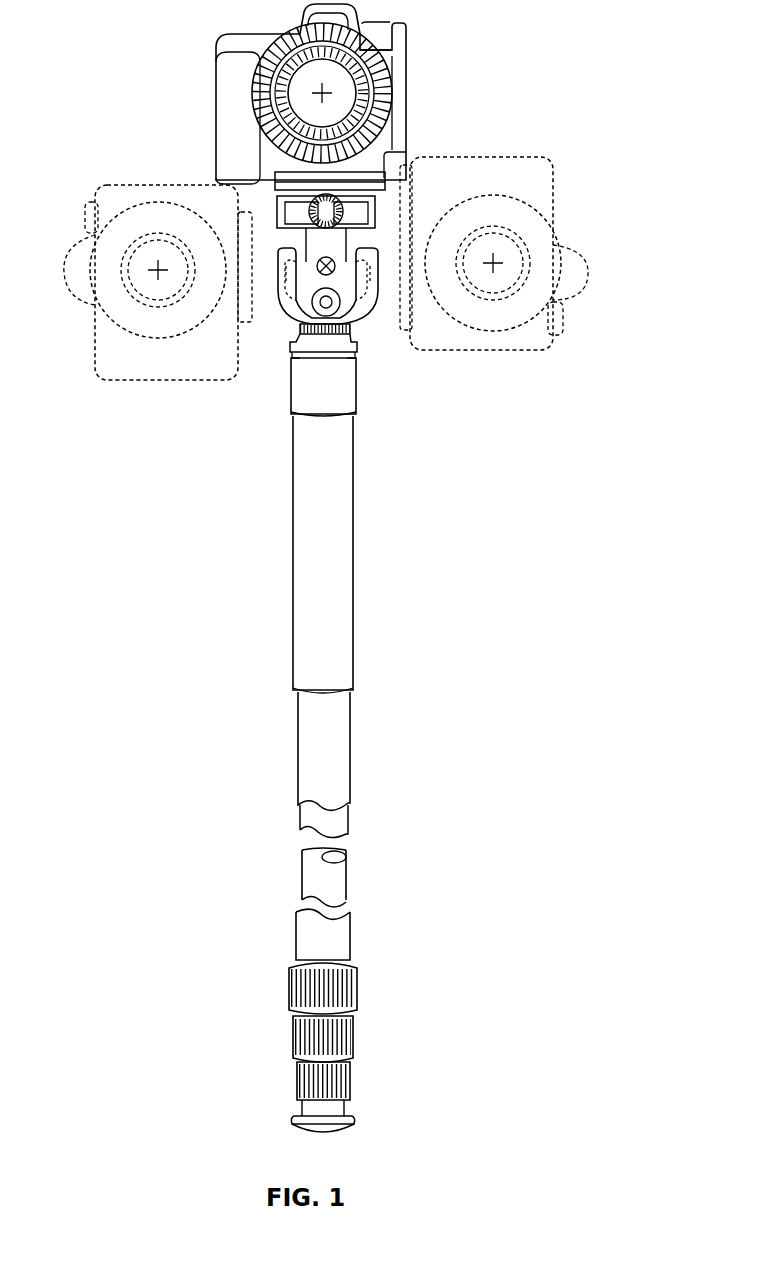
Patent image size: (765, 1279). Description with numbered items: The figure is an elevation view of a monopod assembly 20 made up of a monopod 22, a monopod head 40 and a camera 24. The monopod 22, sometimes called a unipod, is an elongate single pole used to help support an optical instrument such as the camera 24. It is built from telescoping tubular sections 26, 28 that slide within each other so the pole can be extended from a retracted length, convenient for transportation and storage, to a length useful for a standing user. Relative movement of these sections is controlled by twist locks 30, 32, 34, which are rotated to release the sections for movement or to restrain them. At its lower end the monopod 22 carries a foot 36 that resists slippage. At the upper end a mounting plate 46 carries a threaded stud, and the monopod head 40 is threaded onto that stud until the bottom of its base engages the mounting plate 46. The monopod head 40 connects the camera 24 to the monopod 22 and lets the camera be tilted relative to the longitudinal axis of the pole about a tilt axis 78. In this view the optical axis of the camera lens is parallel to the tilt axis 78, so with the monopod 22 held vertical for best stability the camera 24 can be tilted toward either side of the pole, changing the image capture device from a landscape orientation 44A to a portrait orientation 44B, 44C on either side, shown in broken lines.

The monopod assembly 20 is at (119, 846).
The monopod 22 is at (264, 632).
The camera 24 is at (407, 98).
The telescoping tubular section 26 is at (355, 778).
The telescoping tubular section 28 is at (348, 868).
The twist lock 30 is at (358, 985).
The twist lock 32 is at (355, 1031).
The twist lock 34 is at (351, 1081).
The foot 36 is at (350, 1120).
The monopod head 40 is at (293, 313).
The landscape orientation 44A is at (431, 116).
The portrait orientation 44B is at (533, 244).
The portrait orientation 44C is at (147, 328).
The mounting plate 46 is at (356, 348).
The tilt axis 78 is at (331, 270).